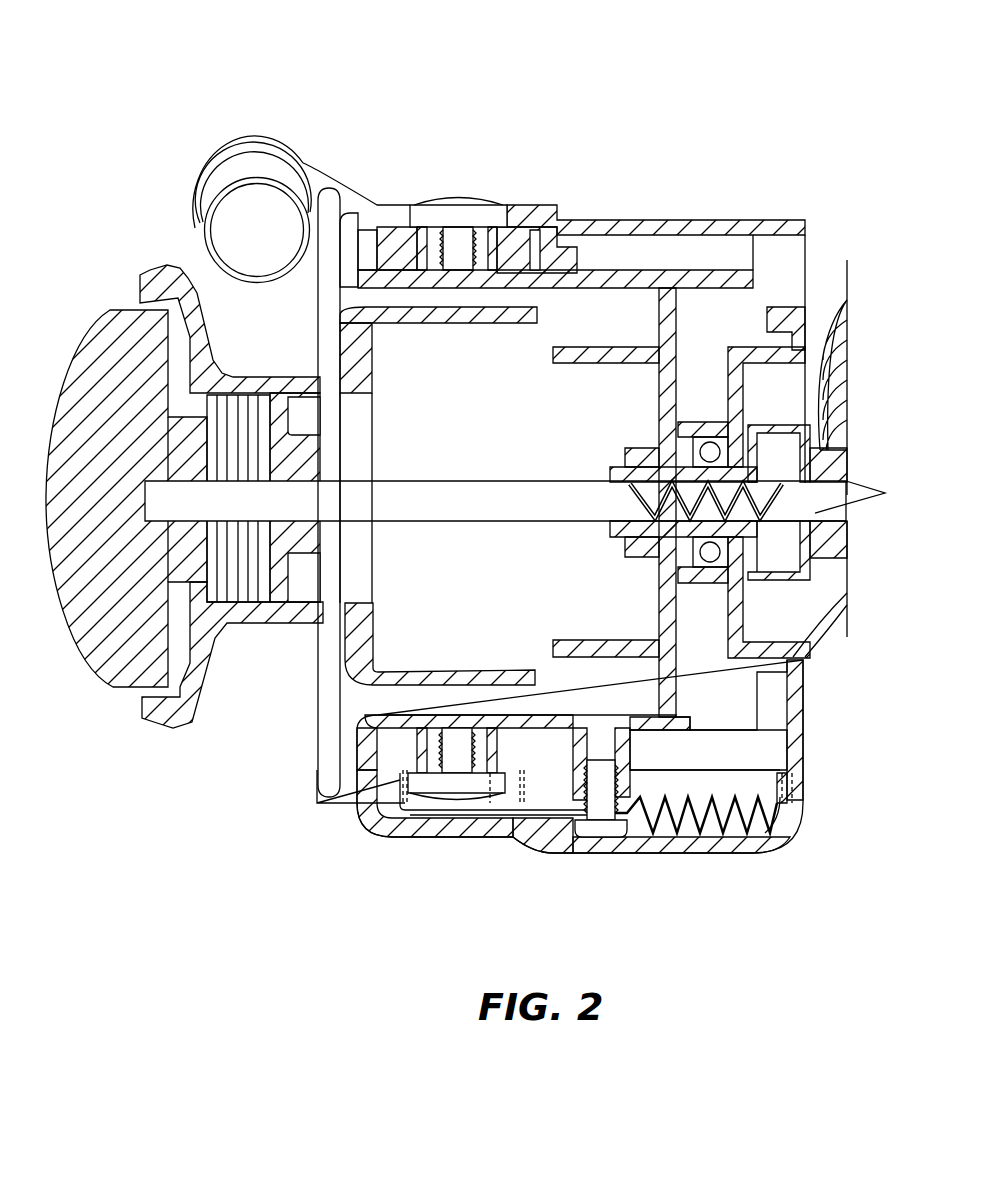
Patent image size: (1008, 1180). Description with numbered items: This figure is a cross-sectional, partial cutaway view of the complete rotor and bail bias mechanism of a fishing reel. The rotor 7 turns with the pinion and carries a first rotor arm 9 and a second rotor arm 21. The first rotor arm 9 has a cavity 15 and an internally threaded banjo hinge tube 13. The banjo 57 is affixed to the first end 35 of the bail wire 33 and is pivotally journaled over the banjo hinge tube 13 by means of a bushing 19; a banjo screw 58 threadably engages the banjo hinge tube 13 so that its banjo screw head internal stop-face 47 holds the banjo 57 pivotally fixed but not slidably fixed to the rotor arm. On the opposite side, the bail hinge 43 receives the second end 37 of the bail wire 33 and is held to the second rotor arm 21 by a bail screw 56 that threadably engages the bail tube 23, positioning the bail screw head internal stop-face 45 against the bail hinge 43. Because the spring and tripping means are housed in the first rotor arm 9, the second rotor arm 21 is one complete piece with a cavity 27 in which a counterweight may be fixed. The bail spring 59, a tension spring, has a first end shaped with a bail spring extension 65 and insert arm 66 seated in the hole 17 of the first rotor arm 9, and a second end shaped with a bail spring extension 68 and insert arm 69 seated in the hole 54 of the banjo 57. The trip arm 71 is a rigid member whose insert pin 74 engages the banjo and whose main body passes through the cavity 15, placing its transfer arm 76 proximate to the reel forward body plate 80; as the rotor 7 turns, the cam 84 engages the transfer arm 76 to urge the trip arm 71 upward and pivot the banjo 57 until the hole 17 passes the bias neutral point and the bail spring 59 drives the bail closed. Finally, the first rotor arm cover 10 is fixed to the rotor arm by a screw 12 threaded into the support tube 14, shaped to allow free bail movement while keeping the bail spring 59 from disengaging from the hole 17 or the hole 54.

The rotor 7 is at (548, 78).
The second end of bail wire 37 is at (313, 193).
The bail hinge 43 is at (352, 203).
The bail screw 56 is at (443, 207).
The cavity 27 is at (638, 250).
The cam 84 is at (777, 313).
The reel forward body plate 80 is at (817, 307).
The bail screw head internal stop-face 45 is at (438, 288).
The bail tube 23 is at (480, 268).
The second rotor arm 21 is at (518, 290).
The bail wire 33 is at (333, 457).
The bail spring insert arm 69 is at (395, 715).
The banjo screw head internal stop-face 47 is at (475, 715).
The bushing 19 is at (500, 715).
The first rotor arm 9 is at (527, 715).
The transfer arm 76 is at (770, 700).
The cavity 15 is at (698, 787).
The bail spring insert arm 66 is at (792, 783).
The hole 17 is at (793, 800).
The bail spring extension 65 is at (783, 833).
The first rotor arm cover 10 is at (718, 843).
The trip arm 71 is at (680, 750).
The screw 12 is at (608, 833).
The bail spring 59 is at (638, 833).
The banjo hinge tube 13 is at (437, 762).
The banjo screw 58 is at (478, 800).
The insert pin 74 is at (512, 787).
The bail spring extension 68 is at (467, 813).
The support tube 14 is at (583, 833).
The banjo 57 is at (378, 824).
The first end of bail wire 35 is at (334, 782).
The hole 54 is at (383, 797).